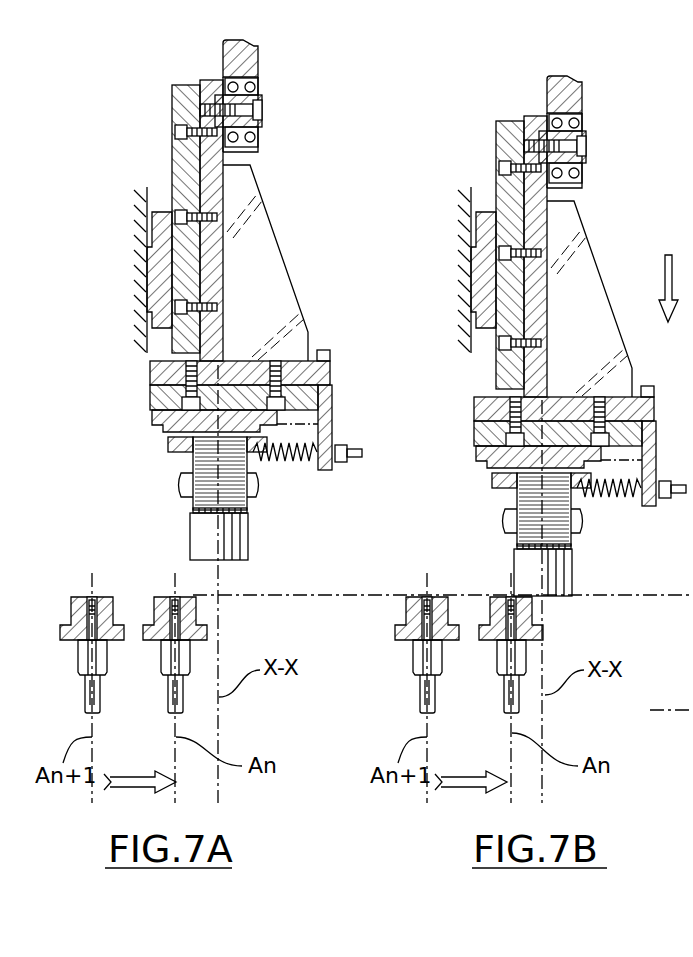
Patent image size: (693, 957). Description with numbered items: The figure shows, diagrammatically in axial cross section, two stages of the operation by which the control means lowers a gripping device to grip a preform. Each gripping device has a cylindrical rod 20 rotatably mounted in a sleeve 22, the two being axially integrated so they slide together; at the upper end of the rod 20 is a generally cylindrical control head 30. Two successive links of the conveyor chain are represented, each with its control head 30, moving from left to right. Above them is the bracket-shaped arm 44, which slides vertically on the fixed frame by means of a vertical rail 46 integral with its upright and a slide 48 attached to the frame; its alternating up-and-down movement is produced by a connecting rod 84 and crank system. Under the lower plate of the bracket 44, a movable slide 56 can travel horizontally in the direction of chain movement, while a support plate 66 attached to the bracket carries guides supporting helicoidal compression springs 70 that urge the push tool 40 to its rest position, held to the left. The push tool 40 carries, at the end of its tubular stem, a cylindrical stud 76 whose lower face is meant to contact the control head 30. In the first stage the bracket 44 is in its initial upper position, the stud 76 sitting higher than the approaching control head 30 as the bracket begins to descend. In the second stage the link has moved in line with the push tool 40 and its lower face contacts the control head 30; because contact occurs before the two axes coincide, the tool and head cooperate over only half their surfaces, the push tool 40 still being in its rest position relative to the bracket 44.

In FIG. 7A, the cylindrical rod 20 is at (183, 700).
In FIG. 7A, the sleeve 22 is at (190, 657).
In FIG. 7A, the control head 30 is at (160, 597).
In FIG. 7B, the control head 30 is at (545, 605).
In FIG. 7A, the push tool 40 is at (162, 482).
In FIG. 7B, the push tool 40 is at (574, 526).
In FIG. 7A, the bracket-shaped arm 44 is at (306, 280).
In FIG. 7B, the bracket-shaped arm 44 is at (602, 281).
In FIG. 7A, the vertical rail 46 is at (178, 164).
In FIG. 7A, the slide 48 is at (158, 250).
In FIG. 7A, the movable slide 56 is at (152, 422).
In FIG. 7A, the support plate 66 is at (334, 410).
In FIG. 7A, the helicoidal compression springs 70 is at (283, 462).
In FIG. 7A, the cylindrical stud 76 is at (242, 535).
In FIG. 7A, the connecting rod 84 is at (262, 72).